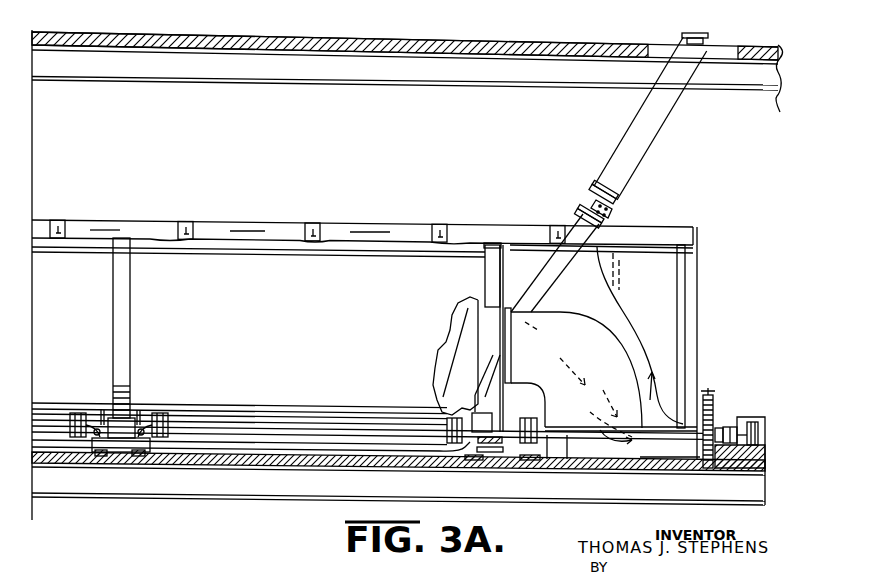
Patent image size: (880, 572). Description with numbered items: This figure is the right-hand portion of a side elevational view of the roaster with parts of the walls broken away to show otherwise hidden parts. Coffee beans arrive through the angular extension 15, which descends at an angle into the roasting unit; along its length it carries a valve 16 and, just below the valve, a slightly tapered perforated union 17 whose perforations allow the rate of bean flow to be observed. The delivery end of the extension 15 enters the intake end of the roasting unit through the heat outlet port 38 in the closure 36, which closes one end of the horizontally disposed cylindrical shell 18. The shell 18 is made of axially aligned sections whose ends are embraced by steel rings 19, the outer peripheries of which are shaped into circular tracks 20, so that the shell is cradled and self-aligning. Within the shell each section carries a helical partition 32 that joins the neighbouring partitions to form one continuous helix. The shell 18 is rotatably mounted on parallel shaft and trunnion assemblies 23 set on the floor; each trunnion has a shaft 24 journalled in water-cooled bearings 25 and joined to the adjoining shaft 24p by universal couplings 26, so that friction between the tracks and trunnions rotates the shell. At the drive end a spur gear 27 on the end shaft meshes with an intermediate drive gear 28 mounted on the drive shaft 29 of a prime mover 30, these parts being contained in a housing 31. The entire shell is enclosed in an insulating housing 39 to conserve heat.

The angular extension 15 is at (650, 131).
The valve 16 is at (594, 192).
The tapered perforated union 17 is at (606, 224).
The cylindrical shell 18 is at (341, 301).
The steel hoops or rings 19 is at (131, 299).
The circular tracks 20 is at (118, 383).
The shaft and trunnion assemblies 23 is at (126, 420).
The shaft 24 is at (128, 466).
The adjoining shaft 24p is at (245, 427).
The bearings 25 is at (113, 440).
The couplings 26 is at (148, 440).
The spur gear 27 is at (719, 422).
The intermediate drive gear 28 is at (706, 392).
The drive shaft 29 is at (398, 478).
The prime mover 30 is at (753, 445).
The housing 31 is at (760, 417).
The helical partition 32 is at (462, 325).
The closure 36 is at (495, 243).
The heat outlet port 38 is at (510, 305).
The housing 39 is at (305, 222).